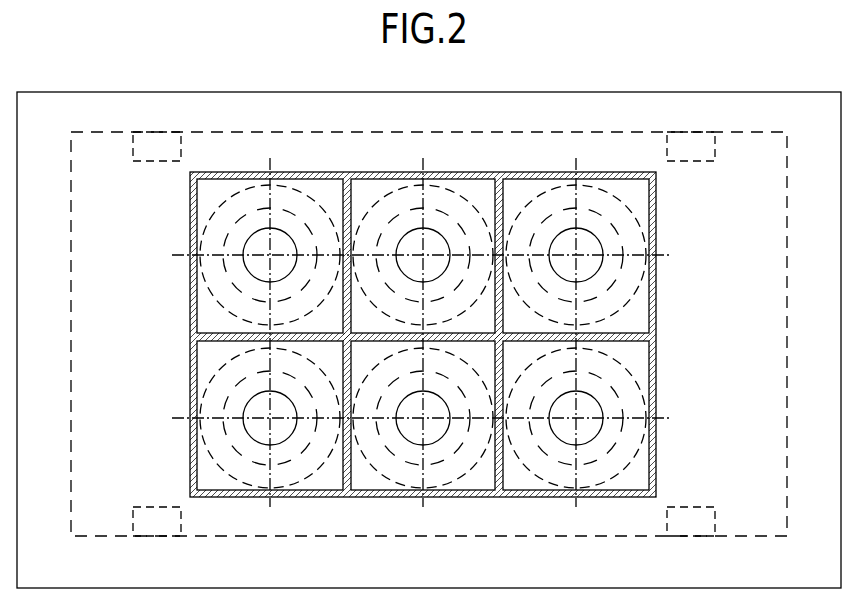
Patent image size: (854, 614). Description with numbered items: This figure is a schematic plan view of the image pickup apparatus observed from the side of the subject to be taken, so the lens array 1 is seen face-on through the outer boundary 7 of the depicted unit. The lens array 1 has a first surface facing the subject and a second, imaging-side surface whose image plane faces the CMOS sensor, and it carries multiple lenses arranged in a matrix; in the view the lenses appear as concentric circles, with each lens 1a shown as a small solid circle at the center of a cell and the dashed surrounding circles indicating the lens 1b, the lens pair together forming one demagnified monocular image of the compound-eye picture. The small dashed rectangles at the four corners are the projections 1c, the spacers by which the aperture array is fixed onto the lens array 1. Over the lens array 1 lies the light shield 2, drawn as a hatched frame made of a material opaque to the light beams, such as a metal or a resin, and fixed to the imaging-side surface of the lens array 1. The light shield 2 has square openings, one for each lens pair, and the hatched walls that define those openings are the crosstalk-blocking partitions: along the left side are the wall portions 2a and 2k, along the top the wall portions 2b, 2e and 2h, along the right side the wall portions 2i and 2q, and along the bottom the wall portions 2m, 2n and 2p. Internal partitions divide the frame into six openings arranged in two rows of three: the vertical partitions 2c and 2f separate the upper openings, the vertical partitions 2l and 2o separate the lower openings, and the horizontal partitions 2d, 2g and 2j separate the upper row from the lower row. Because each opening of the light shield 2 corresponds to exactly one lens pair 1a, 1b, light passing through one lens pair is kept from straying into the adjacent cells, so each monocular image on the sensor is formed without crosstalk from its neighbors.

The illumination device housing / panel 7 is at (94, 92).
The lens array 1 is at (70, 193).
The lens 1a is at (597, 236).
The lens 1b is at (540, 195).
The projection 1c is at (157, 162).
The light shield 2 is at (656, 192).
The partition wall 2a is at (190, 288).
The partition wall 2b is at (290, 172).
The partition wall 2c is at (343, 203).
The partition wall 2d is at (313, 333).
The partition wall 2e is at (410, 172).
The partition wall 2f is at (495, 202).
The partition wall 2g is at (466, 333).
The partition wall 2h is at (590, 172).
The partition wall 2i is at (656, 277).
The partition wall 2j is at (637, 334).
The partition wall 2k is at (190, 374).
The partition wall 2l is at (343, 362).
The partition wall 2m is at (256, 497).
The partition wall 2n is at (405, 497).
The partition wall 2o is at (495, 360).
The partition wall 2p is at (545, 497).
The partition wall 2q is at (656, 450).